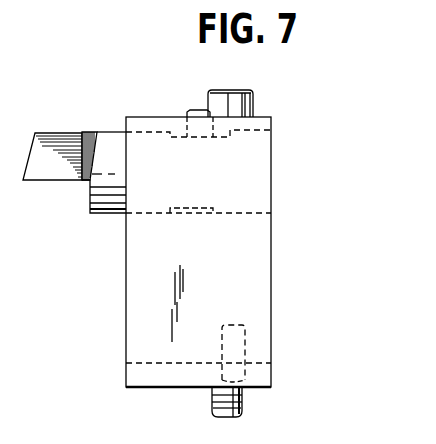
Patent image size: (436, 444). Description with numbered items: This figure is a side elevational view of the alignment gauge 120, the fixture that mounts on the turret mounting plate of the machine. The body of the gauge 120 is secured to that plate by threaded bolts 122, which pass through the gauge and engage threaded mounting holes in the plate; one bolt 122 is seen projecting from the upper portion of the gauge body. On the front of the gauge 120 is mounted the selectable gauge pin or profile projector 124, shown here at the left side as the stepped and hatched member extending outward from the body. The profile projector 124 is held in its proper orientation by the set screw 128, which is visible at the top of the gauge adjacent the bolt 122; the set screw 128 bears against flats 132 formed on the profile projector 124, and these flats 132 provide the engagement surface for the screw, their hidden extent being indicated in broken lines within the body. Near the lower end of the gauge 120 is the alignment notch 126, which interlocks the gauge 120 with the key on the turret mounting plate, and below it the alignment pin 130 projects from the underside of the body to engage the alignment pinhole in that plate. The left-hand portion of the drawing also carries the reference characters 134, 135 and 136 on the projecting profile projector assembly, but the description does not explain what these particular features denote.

The alignment gauge 120 is at (0, 110).
The threaded bolts 122 is at (251, 110).
The selectable gauge pin or profile projector 124 is at (108, 130).
The alignment notch 126 is at (132, 363).
The set screw 128 is at (196, 110).
The alignment pin 130 is at (240, 355).
The flats 132 is at (177, 116).
The handle 134 is at (25, 170).
The grip surface 135 is at (47, 140).
The wedge member 136 is at (86, 130).